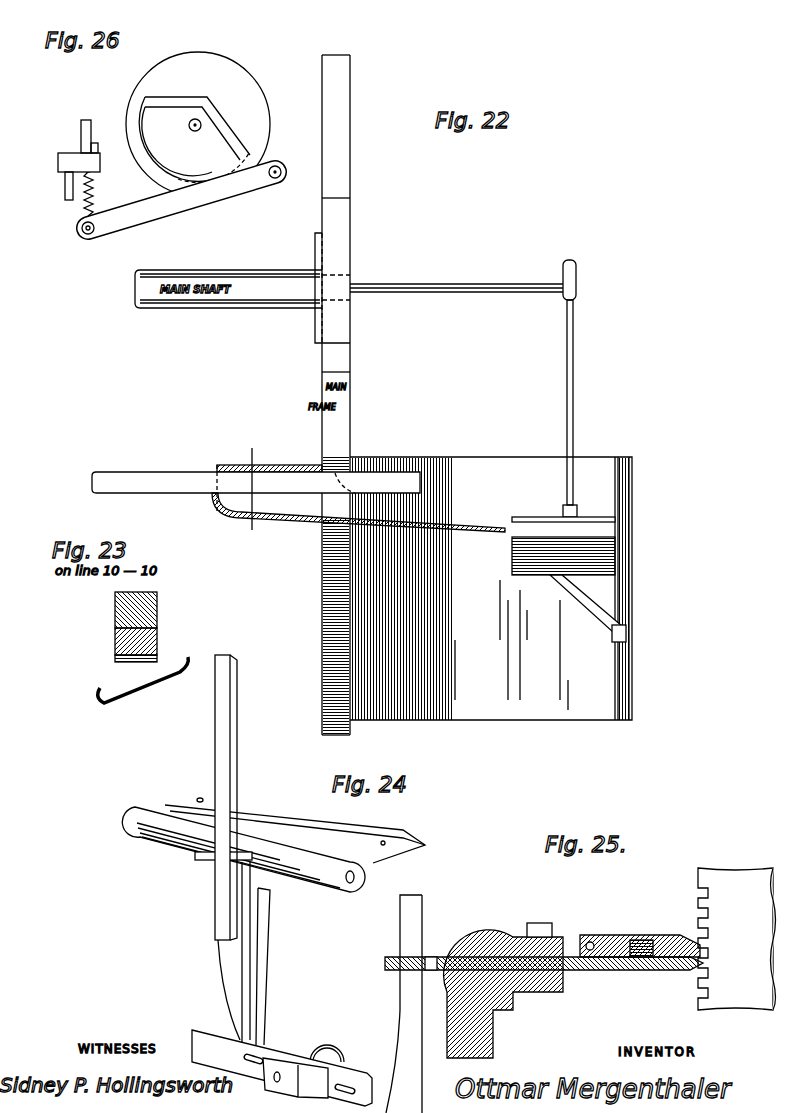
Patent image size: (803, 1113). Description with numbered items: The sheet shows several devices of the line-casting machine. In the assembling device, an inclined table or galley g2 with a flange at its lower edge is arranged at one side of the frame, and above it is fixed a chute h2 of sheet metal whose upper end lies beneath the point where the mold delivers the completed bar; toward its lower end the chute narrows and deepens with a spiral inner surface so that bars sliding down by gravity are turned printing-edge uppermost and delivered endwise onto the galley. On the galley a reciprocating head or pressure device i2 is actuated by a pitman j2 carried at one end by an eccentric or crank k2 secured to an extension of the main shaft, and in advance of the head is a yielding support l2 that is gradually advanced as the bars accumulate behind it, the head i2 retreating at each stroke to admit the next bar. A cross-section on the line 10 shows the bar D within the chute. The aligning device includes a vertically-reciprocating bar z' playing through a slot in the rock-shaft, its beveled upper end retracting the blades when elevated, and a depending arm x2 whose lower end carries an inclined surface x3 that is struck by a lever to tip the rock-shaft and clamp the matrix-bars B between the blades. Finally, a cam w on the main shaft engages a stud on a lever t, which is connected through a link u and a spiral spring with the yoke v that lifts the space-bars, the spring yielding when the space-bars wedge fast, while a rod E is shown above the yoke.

In FIG. 26, the cam w is at (198, 124).
In FIG. 26, the lever t is at (181, 200).
In FIG. 26, the link u is at (98, 192).
In FIG. 26, the vertically-sliding frame or yoke v is at (79, 176).
In FIG. 26, the rod E is at (80, 130).
In FIG. 22, the eccentric or crank k2 is at (579, 279).
In FIG. 22, the pitman j2 is at (575, 408).
In FIG. 22, the inclined table or galley g2 is at (491, 588).
In FIG. 22, the reciprocating head or pressure device i2 is at (563, 510).
In FIG. 22, the yielding head or support l2 is at (569, 589).
In FIG. 22, the bar D is at (256, 488).
In FIG. 23, the bar D is at (157, 626).
In FIG. 22, the chute h2 is at (358, 512).
In FIG. 23, the chute h2 is at (143, 684).
In FIG. 22, the section line 10 is at (253, 494).
In FIG. 24, the depending arm x2 is at (243, 926).
In FIG. 25, the depending arm x2 is at (544, 990).
In FIG. 24, the vertically-reciprocating bar z' is at (226, 797).
In FIG. 25, the vertically-reciprocating bar z' is at (404, 1004).
In FIG. 24, the inclined surface x3 is at (282, 1068).
In FIG. 25, the rack B is at (737, 939).